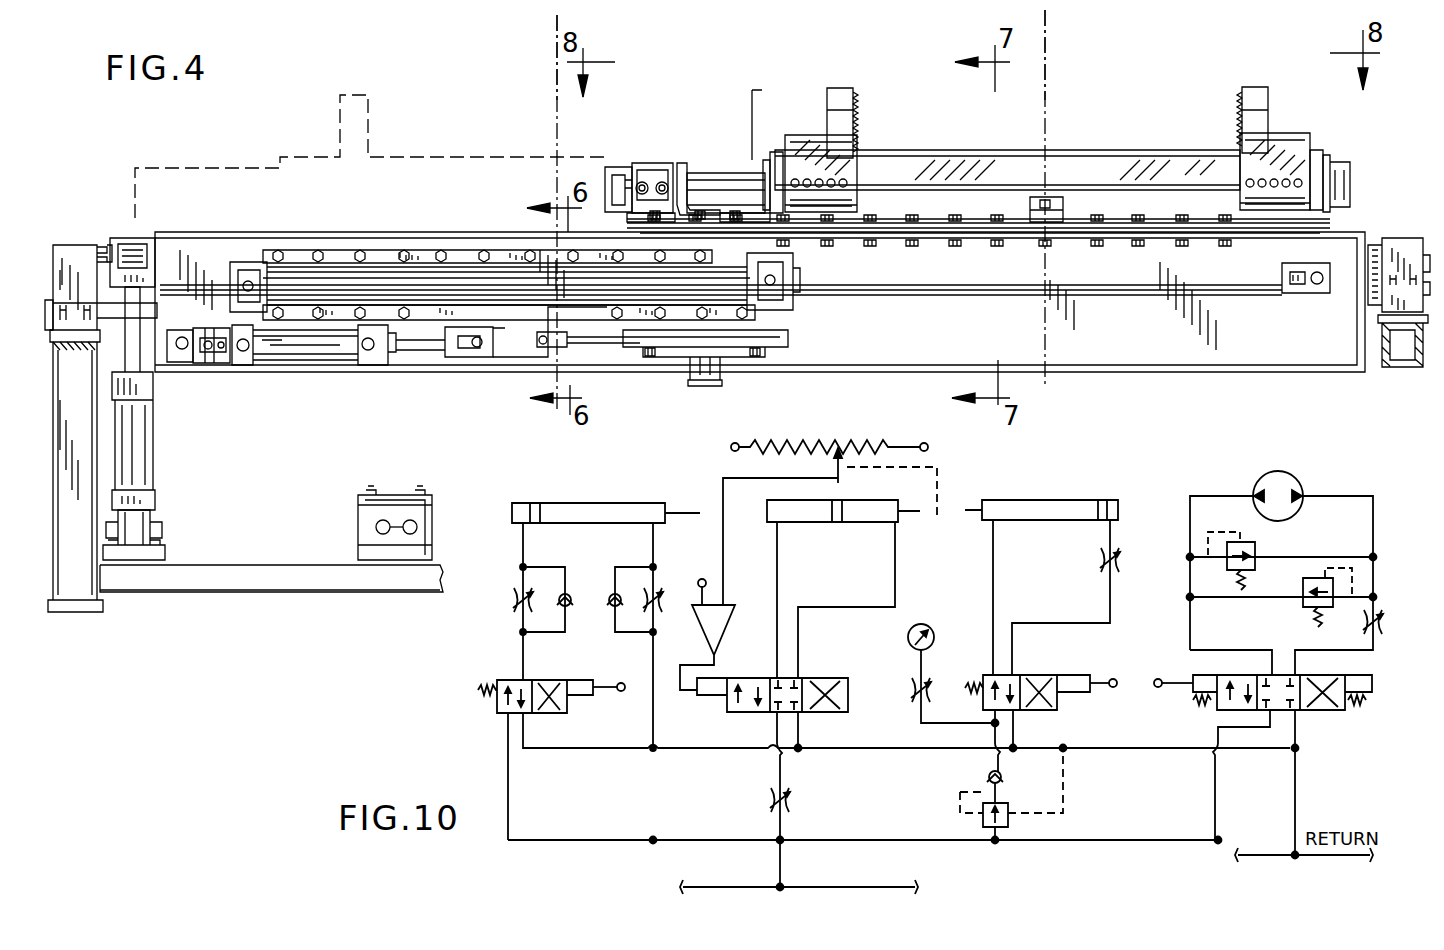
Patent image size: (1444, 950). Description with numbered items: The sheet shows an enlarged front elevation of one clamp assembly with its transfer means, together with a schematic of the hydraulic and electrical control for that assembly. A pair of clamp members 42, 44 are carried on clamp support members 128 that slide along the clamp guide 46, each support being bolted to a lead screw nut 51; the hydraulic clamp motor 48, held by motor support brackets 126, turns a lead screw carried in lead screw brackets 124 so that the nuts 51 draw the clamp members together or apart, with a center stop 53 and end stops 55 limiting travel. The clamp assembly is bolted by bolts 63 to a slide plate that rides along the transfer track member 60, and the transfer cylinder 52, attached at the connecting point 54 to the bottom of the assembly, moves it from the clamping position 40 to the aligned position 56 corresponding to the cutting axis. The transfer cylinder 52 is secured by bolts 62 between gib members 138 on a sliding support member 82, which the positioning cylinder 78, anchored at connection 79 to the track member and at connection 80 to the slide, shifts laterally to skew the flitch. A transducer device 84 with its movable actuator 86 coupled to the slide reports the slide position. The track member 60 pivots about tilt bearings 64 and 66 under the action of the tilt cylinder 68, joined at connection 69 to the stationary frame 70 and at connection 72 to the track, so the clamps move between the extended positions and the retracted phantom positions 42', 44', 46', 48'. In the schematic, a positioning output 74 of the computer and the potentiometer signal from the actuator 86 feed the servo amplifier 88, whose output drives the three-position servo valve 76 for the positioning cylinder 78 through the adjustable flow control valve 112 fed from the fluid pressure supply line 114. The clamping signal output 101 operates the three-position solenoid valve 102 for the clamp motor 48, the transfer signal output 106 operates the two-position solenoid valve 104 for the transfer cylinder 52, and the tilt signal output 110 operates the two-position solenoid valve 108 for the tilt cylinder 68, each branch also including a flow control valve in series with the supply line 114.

In FIG. 4, the clamping position 40 is at (1045, 55).
In FIG. 4, the clamp member 42 is at (880, 118).
In FIG. 4, the retracted position of clamp member 42' is at (403, 94).
In FIG. 4, the clamp member 44 is at (1224, 115).
In FIG. 4, the retracted position of clamp member 44' is at (722, 120).
In FIG. 4, the clamp guide 46 is at (1007, 147).
In FIG. 4, the retracted position of clamp guide 46' is at (475, 132).
In FIG. 4, the hydraulic clamp motor 48 is at (649, 153).
In FIG. 10, the hydraulic clamp motor 48 is at (1299, 488).
In FIG. 4, the retracted position of clamp motor 48' is at (195, 141).
In FIG. 4, the lead screw nut 51 is at (862, 205).
In FIG. 4, the transfer cylinder 52 is at (515, 285).
In FIG. 10, the transfer cylinder 52 is at (575, 503).
In FIG. 4, the center stop 53 is at (1035, 207).
In FIG. 4, the connecting point 54 is at (1316, 293).
In FIG. 4, the end stop 55 is at (777, 152).
In FIG. 4, the aligned position / cutting axis 56 is at (557, 66).
In FIG. 4, the transfer track member 60 is at (208, 245).
In FIG. 4, the bolts 62 is at (441, 250).
In FIG. 4, the bolts 63 is at (733, 212).
In FIG. 4, the tilt bearing 64 is at (50, 270).
In FIG. 4, the tilt bearing 66 is at (1420, 240).
In FIG. 4, the tilt cylinder 68 is at (142, 457).
In FIG. 10, the tilt cylinder 68 is at (1035, 500).
In FIG. 4, the connection 69 is at (168, 530).
In FIG. 4, the stationary frame 70 is at (95, 400).
In FIG. 4, the connection 72 is at (160, 238).
In FIG. 10, the positioning output 74 is at (702, 579).
In FIG. 4, the solenoid actuated servo valve 76 is at (197, 353).
In FIG. 10, the solenoid actuated servo valve 76 is at (825, 677).
In FIG. 4, the positioning cylinder 78 is at (305, 358).
In FIG. 10, the positioning cylinder 78 is at (812, 522).
In FIG. 4, the connection 79 is at (182, 342).
In FIG. 4, the connection 80 is at (475, 348).
In FIG. 4, the sliding support member 82 is at (518, 358).
In FIG. 4, the transducer device 84 is at (668, 348).
In FIG. 10, the transducer device 84 is at (838, 440).
In FIG. 4, the movable actuator 86 is at (590, 342).
In FIG. 10, the movable actuator 86 is at (905, 470).
In FIG. 10, the servo amplifier 88 is at (728, 637).
In FIG. 10, the clamping signal output 101 is at (1158, 678).
In FIG. 10, the solenoid valve 102 is at (1325, 712).
In FIG. 10, the solenoid valve 104 is at (510, 680).
In FIG. 10, the transfer signal output 106 is at (620, 682).
In FIG. 10, the solenoid valve 108 is at (1040, 675).
In FIG. 10, the tilt signal output 110 is at (1113, 679).
In FIG. 10, the adjustable flow control valve 112 is at (765, 800).
In FIG. 10, the fluid pressure supply line 114 is at (785, 868).
In FIG. 4, the lead screw bracket 124 is at (765, 162).
In FIG. 4, the motor support bracket 126 is at (622, 168).
In FIG. 4, the clamp support member 128 is at (820, 138).
In FIG. 4, the gib member 138 is at (468, 252).